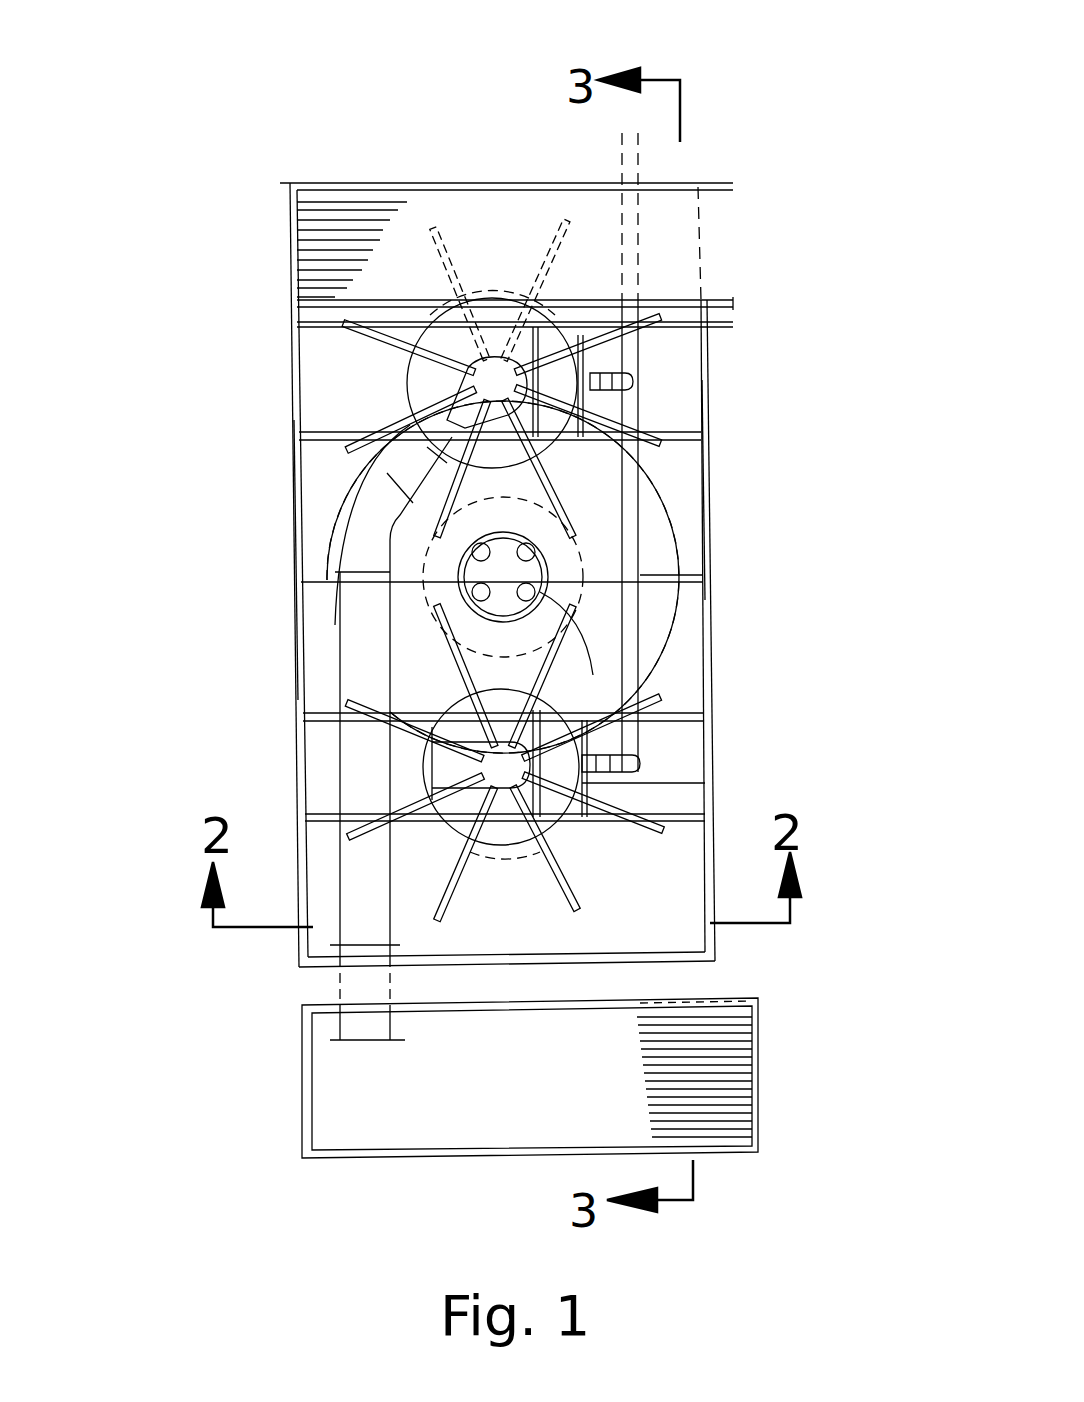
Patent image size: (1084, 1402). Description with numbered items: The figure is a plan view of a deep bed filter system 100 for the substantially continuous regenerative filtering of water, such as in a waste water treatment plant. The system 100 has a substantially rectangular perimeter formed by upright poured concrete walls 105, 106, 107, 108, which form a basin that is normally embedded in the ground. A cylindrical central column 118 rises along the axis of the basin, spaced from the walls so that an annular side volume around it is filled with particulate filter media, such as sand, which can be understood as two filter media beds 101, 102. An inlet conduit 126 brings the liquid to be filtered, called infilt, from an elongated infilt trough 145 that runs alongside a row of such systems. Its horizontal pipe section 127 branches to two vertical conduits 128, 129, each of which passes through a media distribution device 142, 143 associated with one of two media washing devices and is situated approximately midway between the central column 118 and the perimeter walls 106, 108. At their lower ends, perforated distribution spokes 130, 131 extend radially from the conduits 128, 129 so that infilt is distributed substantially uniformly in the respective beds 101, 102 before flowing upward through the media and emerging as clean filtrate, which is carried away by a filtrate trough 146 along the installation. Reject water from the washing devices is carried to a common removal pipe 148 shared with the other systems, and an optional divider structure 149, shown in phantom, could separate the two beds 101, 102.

The deep bed filter system 100 is at (312, 82).
The filter media bed 101 is at (683, 757).
The filter media bed 102 is at (677, 473).
The upright wall 105 is at (300, 477).
The upright wall 106 is at (380, 185).
The upright wall 107 is at (707, 405).
The upright wall 108 is at (672, 960).
The central column 118 is at (547, 563).
The inlet conduit 126 is at (355, 627).
The pipe section 127 is at (360, 770).
The vertical conduit 128 is at (653, 665).
The vertical conduit 129 is at (650, 348).
The distribution spoke 130 is at (575, 885).
The distribution spoke 131 is at (385, 357).
The media distribution device 142 is at (690, 783).
The media distribution device 143 is at (636, 383).
The infilt trough 145 is at (323, 1077).
The filtrate trough 146 is at (480, 203).
The common removal pipe 148 is at (640, 512).
The divider structure 149 is at (650, 577).